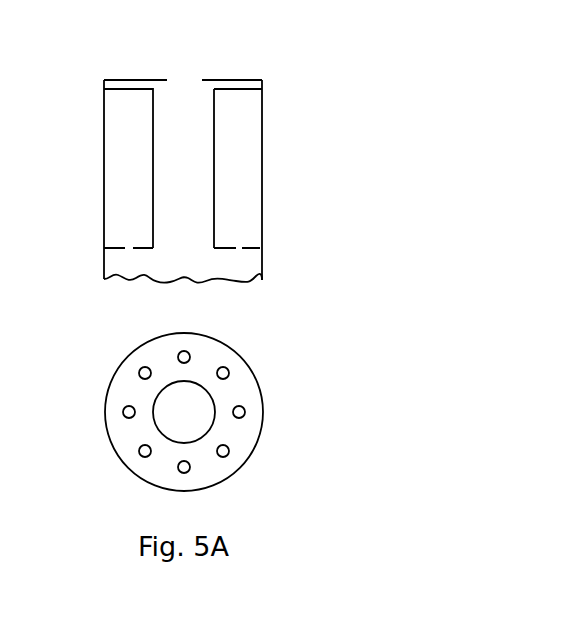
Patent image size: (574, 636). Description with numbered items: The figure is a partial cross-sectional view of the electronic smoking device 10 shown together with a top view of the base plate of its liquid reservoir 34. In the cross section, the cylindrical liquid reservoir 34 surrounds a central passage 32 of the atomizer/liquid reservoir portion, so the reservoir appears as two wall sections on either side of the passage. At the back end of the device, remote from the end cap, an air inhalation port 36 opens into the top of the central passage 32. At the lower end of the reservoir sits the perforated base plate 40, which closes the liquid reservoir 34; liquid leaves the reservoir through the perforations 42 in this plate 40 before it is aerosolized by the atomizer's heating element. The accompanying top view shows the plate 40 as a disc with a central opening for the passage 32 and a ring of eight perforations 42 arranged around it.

The electronic smoking device 10 is at (292, 51).
The central passage 32 is at (194, 177).
The liquid reservoir 34 is at (120, 135).
The air inhalation port 36 is at (183, 78).
The perforated plate 40 is at (262, 232).
The perforation 42 is at (240, 247).